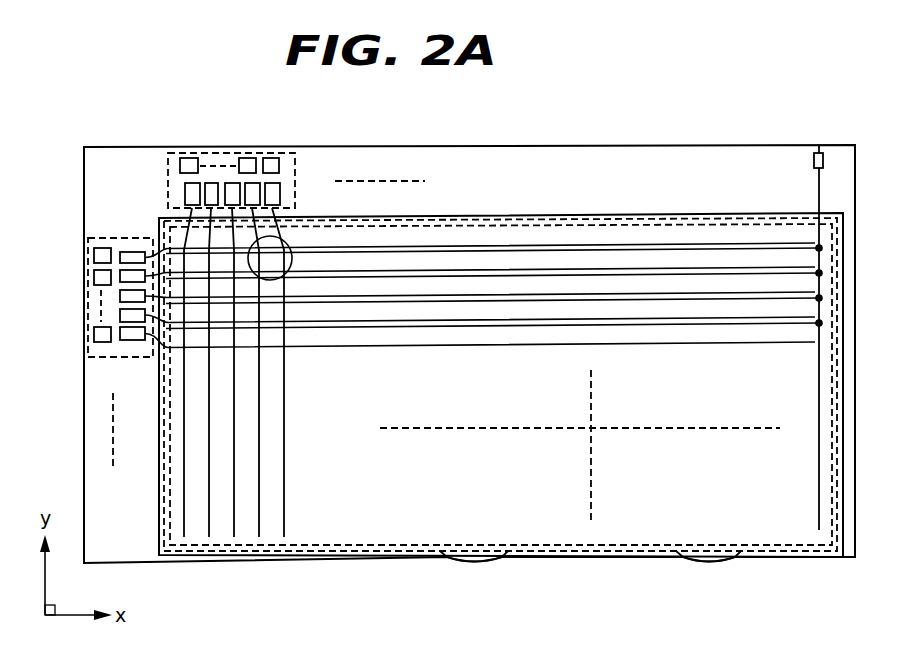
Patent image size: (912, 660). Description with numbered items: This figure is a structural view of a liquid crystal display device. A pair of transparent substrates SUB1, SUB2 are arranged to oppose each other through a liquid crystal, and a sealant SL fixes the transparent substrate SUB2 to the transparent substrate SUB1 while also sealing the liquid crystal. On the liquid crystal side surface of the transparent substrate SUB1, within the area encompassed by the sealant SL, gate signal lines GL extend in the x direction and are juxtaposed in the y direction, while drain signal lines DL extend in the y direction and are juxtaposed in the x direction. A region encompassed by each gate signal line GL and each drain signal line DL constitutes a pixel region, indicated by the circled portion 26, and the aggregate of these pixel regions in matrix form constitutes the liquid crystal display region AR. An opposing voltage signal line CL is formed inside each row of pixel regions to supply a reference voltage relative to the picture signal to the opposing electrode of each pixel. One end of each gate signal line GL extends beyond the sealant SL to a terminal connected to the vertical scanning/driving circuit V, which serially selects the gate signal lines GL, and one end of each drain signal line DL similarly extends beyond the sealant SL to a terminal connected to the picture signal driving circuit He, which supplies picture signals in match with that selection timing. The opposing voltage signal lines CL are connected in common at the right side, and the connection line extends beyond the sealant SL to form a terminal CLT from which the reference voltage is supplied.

The transparent substrate SUB1 is at (722, 145).
The transparent substrate SUB2 is at (606, 215).
The liquid crystal display region AR is at (501, 384).
The sealant SL is at (535, 545).
The picture signal driving circuit He is at (168, 173).
The vertical scanning/driving circuit V is at (88, 320).
The gate signal line GL is at (363, 346).
The opposing voltage signal line CL is at (510, 327).
The terminal CLT is at (819, 146).
The drain signal line DL is at (284, 429).
The pixel region 26 is at (284, 262).